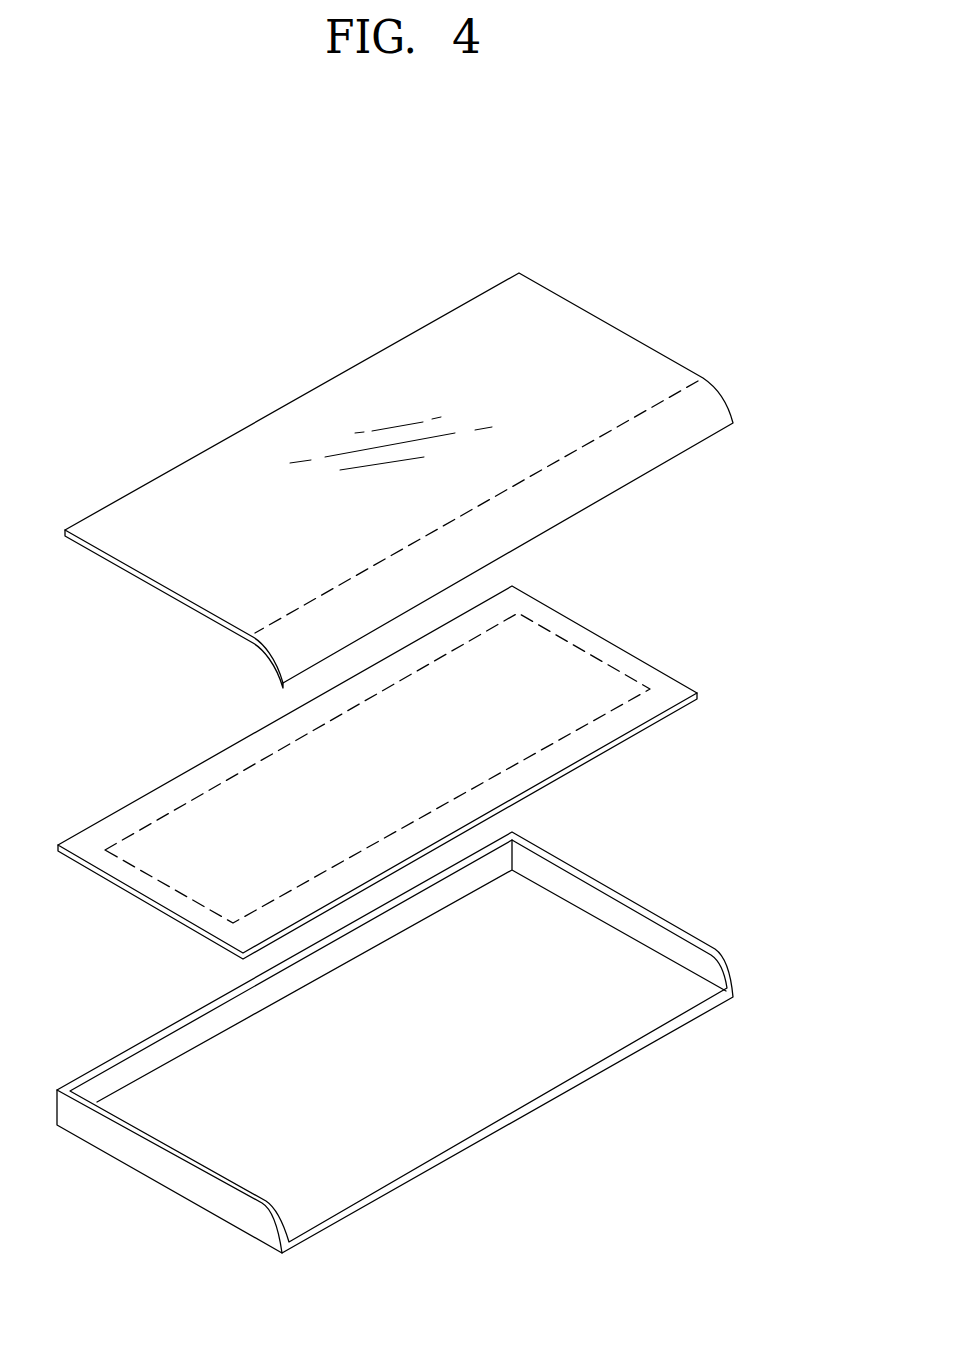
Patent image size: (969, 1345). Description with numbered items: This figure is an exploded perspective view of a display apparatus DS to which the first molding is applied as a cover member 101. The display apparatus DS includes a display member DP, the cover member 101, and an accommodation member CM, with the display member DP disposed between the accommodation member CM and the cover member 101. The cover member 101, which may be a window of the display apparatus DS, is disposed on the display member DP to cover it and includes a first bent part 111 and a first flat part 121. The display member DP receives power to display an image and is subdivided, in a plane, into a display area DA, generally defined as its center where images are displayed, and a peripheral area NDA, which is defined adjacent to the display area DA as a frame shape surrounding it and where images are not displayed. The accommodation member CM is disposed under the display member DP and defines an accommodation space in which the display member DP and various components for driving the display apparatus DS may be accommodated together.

The display apparatus DS is at (217, 278).
The cover member 101 is at (812, 340).
The first flat part 121 is at (680, 367).
The first bent part 111 is at (710, 405).
The display member DP is at (670, 692).
The display area DA is at (222, 803).
The peripheral area NDA is at (122, 827).
The accommodation member CM is at (734, 988).